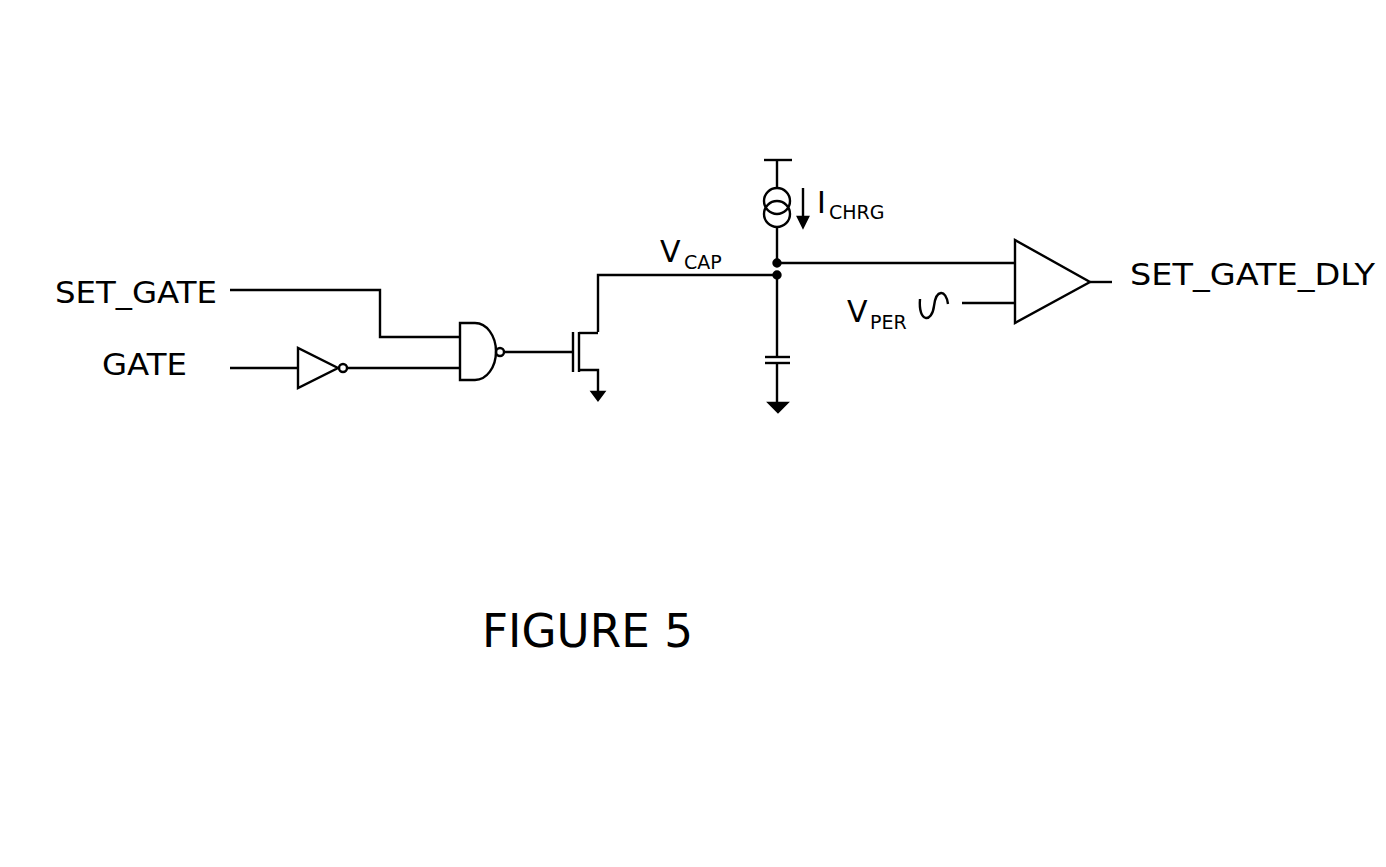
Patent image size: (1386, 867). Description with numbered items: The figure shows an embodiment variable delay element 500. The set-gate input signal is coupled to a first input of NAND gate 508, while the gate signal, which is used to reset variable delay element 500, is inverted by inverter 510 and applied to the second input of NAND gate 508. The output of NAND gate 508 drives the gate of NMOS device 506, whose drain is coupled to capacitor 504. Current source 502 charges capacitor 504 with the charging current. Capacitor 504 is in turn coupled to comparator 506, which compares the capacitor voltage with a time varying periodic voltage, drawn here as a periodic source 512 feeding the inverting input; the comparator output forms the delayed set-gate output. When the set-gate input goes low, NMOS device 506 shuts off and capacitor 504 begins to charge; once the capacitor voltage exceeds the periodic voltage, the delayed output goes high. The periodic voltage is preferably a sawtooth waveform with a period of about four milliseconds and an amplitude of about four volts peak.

The variable delay element 500 is at (192, 84).
The current source 502 is at (757, 203).
The capacitor 504 is at (753, 362).
The NMOS device / comparator 506 is at (603, 350).
The NAND gate 508 is at (485, 322).
The inverter 510 is at (320, 380).
The periodic voltage source 512 is at (950, 330).